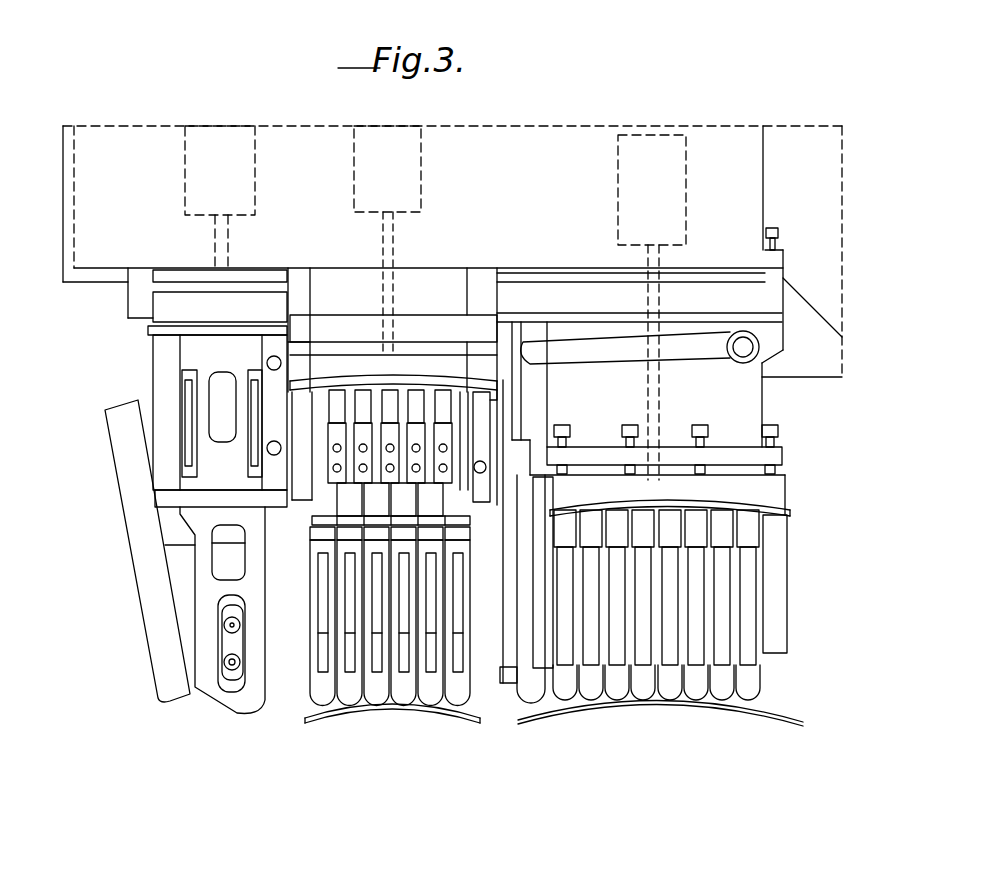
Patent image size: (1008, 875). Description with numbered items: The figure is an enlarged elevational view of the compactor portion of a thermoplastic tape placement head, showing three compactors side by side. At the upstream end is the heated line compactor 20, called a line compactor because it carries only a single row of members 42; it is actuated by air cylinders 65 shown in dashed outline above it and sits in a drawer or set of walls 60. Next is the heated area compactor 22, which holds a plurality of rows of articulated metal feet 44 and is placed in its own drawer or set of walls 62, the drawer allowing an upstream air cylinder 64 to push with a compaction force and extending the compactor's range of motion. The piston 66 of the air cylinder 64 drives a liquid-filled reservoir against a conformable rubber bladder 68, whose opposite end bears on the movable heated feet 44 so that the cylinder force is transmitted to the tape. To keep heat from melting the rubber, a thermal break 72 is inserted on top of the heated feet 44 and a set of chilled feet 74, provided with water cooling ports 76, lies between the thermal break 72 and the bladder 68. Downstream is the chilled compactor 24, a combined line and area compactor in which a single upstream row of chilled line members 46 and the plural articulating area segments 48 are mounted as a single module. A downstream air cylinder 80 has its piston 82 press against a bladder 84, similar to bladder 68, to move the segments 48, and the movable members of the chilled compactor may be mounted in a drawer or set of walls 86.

The heated line compactor 20 is at (207, 705).
The heated area compactor 22 is at (424, 698).
The chilled compactor 24 is at (729, 697).
The members 42 is at (243, 700).
The feet 44 is at (405, 692).
The members 46 is at (531, 700).
The segments 48 is at (723, 678).
The drawer 60 is at (165, 362).
The drawer 62 is at (300, 494).
The air cylinder 64 is at (413, 153).
The air cylinders 65 is at (195, 145).
The piston 66 is at (398, 241).
The conformable bladder 68 is at (352, 383).
The thermal break 72 is at (452, 512).
The chilled feet 74 is at (455, 400).
The water cooling ports 76 is at (447, 447).
The air cylinder 80 is at (676, 152).
The piston 82 is at (655, 398).
The bladder 84 is at (753, 510).
The drawer 86 is at (778, 552).